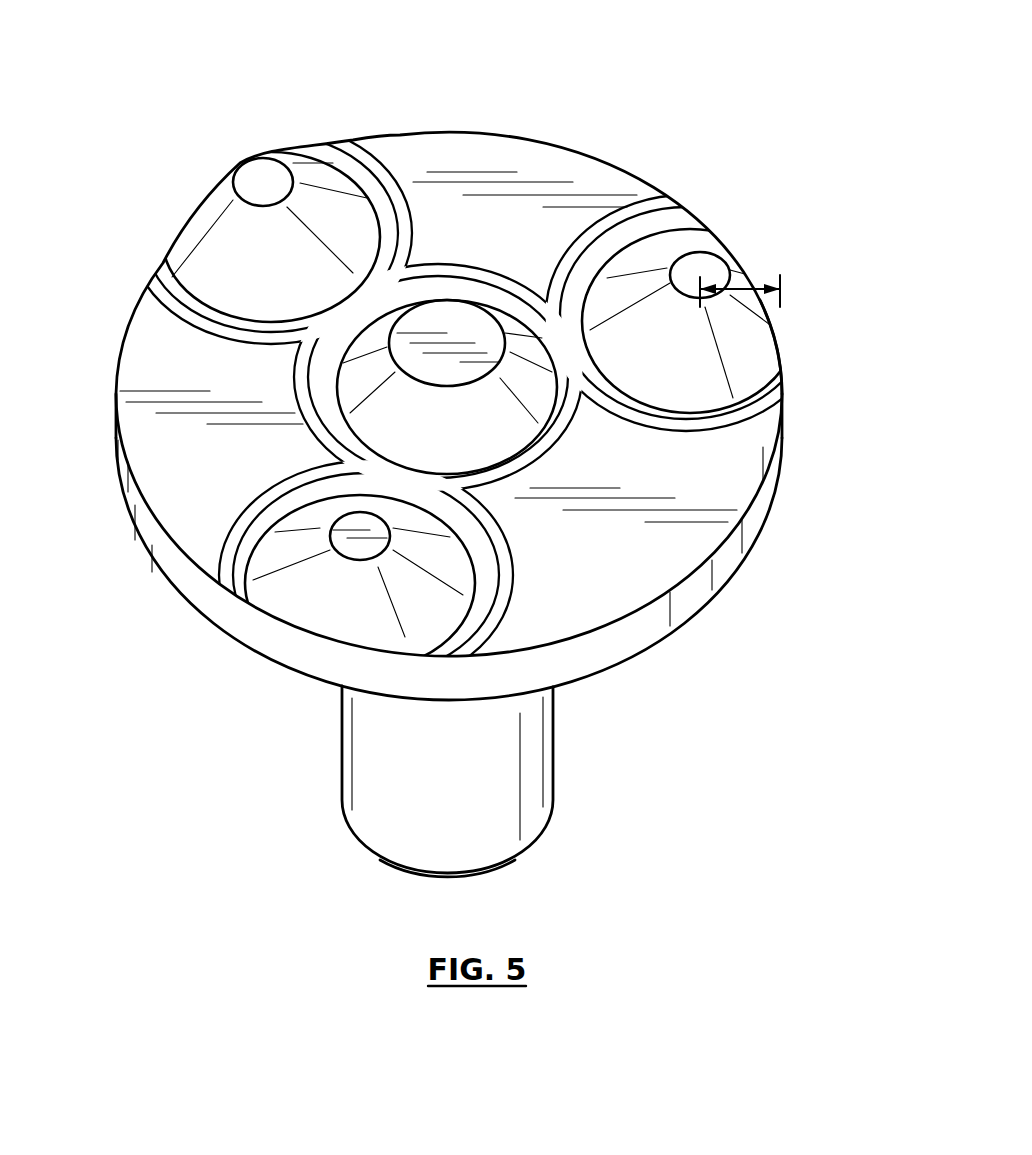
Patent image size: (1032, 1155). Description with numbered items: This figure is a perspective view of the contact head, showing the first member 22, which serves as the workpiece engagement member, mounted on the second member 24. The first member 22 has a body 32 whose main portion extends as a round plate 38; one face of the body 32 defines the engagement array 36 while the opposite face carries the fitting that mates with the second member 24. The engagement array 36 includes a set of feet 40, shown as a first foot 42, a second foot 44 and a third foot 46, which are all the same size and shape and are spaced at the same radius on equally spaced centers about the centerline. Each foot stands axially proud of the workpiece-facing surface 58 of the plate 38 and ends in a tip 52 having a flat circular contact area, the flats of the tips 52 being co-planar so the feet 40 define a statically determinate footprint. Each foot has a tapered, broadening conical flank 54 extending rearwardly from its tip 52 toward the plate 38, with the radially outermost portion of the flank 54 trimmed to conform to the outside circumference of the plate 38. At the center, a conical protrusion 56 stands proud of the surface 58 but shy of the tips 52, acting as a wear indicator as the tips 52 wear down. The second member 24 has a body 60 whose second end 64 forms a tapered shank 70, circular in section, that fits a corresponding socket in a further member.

The first member 22 is at (820, 106).
The second member 24 is at (717, 658).
The body 32 is at (820, 427).
The engagement array 36 is at (637, 138).
The plate 38 is at (133, 513).
The feet 40 is at (742, 280).
The first foot 42 is at (760, 340).
The second foot 44 is at (267, 585).
The third foot 46 is at (188, 242).
The tip 52 is at (245, 178).
The flank 54 is at (203, 213).
The protrusion 56 is at (450, 313).
The workpiece-facing surface 58 is at (147, 340).
The body 60 is at (310, 806).
The second end 64 is at (357, 866).
The shank 70 is at (530, 790).